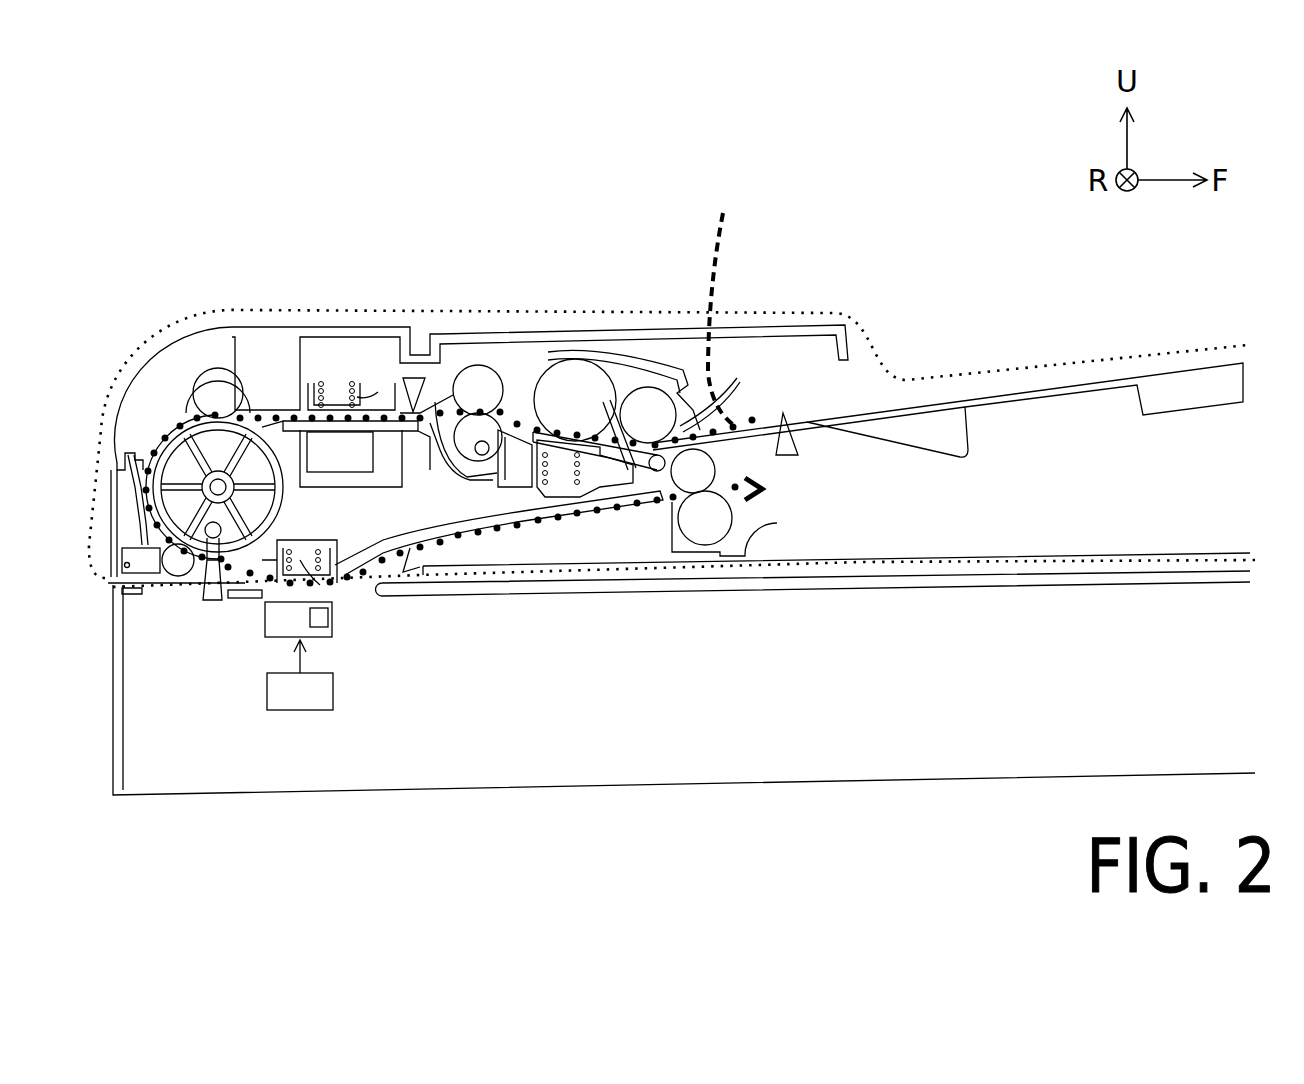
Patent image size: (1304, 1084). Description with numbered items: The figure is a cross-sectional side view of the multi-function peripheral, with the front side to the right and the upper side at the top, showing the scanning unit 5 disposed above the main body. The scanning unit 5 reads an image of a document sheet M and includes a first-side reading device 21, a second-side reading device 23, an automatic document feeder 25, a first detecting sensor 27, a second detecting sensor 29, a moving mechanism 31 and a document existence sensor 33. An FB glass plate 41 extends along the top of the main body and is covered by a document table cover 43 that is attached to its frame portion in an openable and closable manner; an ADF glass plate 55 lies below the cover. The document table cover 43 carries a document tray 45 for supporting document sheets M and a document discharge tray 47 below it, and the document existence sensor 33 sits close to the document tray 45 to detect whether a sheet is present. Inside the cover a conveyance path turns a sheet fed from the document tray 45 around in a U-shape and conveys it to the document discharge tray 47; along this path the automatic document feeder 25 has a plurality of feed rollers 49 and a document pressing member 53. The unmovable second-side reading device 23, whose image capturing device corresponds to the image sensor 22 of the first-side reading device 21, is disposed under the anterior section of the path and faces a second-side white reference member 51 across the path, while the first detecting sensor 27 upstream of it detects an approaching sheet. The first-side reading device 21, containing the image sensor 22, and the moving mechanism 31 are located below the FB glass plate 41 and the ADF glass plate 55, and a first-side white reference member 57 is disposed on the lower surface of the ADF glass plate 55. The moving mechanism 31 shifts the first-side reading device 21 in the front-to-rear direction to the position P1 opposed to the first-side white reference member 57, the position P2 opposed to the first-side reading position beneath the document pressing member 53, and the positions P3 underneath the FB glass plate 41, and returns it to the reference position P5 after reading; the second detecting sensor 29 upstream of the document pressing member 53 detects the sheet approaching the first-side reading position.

The scanning unit 5 is at (547, 174).
The first-side reading device 21 is at (277, 627).
The image sensor 22 is at (328, 618).
The second-side reading device 23 is at (345, 462).
The automatic document feeder 25 is at (147, 403).
The first detecting sensor 27 is at (413, 378).
The second detecting sensor 29 is at (223, 560).
The moving mechanism 31 is at (292, 693).
The document existence sensor 33 is at (792, 455).
The FB glass plate 41 is at (1092, 568).
The document table cover 43 is at (800, 310).
The document tray 45 is at (1033, 390).
The document discharge tray 47 is at (780, 526).
The feed rollers 49 is at (227, 452).
The second-side white reference member 51 is at (370, 397).
The document pressing member 53 is at (277, 542).
The ADF glass plate 55 is at (133, 590).
The first-side white reference member 57 is at (237, 600).
The document sheet M is at (721, 301).
The position P1 is at (250, 597).
The position P2 is at (328, 600).
The reference position P5 is at (457, 633).
The positions P3 is at (1253, 585).